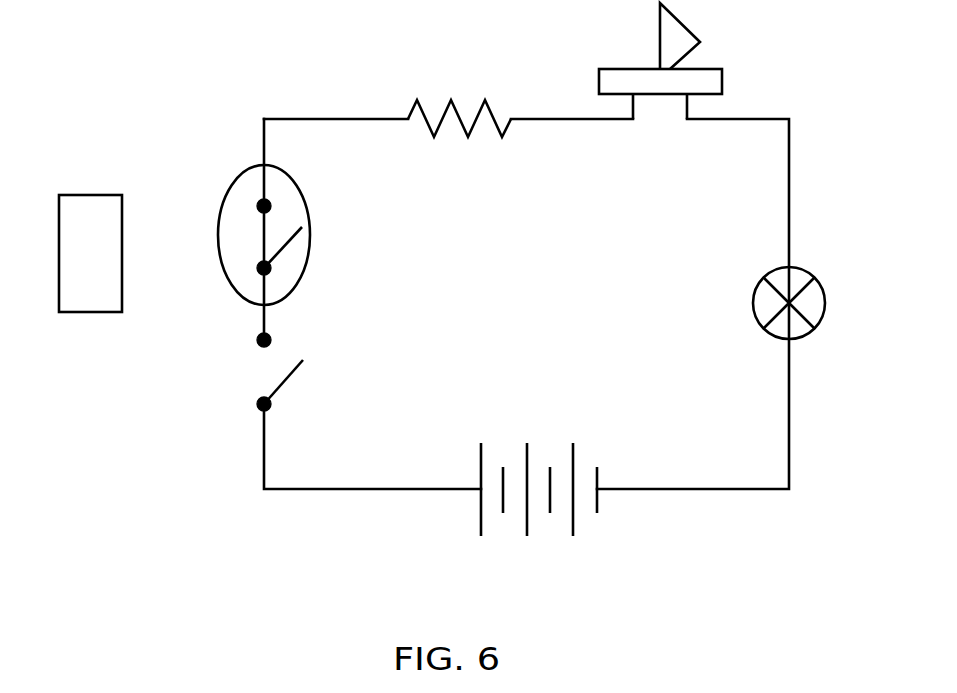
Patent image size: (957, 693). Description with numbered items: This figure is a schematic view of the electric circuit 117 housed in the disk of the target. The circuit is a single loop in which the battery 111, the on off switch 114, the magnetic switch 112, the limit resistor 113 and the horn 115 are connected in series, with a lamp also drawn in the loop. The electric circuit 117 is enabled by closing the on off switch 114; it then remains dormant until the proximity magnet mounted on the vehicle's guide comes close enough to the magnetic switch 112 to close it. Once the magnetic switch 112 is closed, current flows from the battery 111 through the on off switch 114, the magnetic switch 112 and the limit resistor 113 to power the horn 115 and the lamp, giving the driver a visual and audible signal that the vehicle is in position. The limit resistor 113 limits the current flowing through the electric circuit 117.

The battery 111 is at (543, 535).
The magnetic switch 112 is at (310, 253).
The limit resistor 113 is at (452, 100).
The on off switch 114 is at (283, 381).
The horn 115 is at (721, 82).
The electric circuit 117 is at (675, 508).